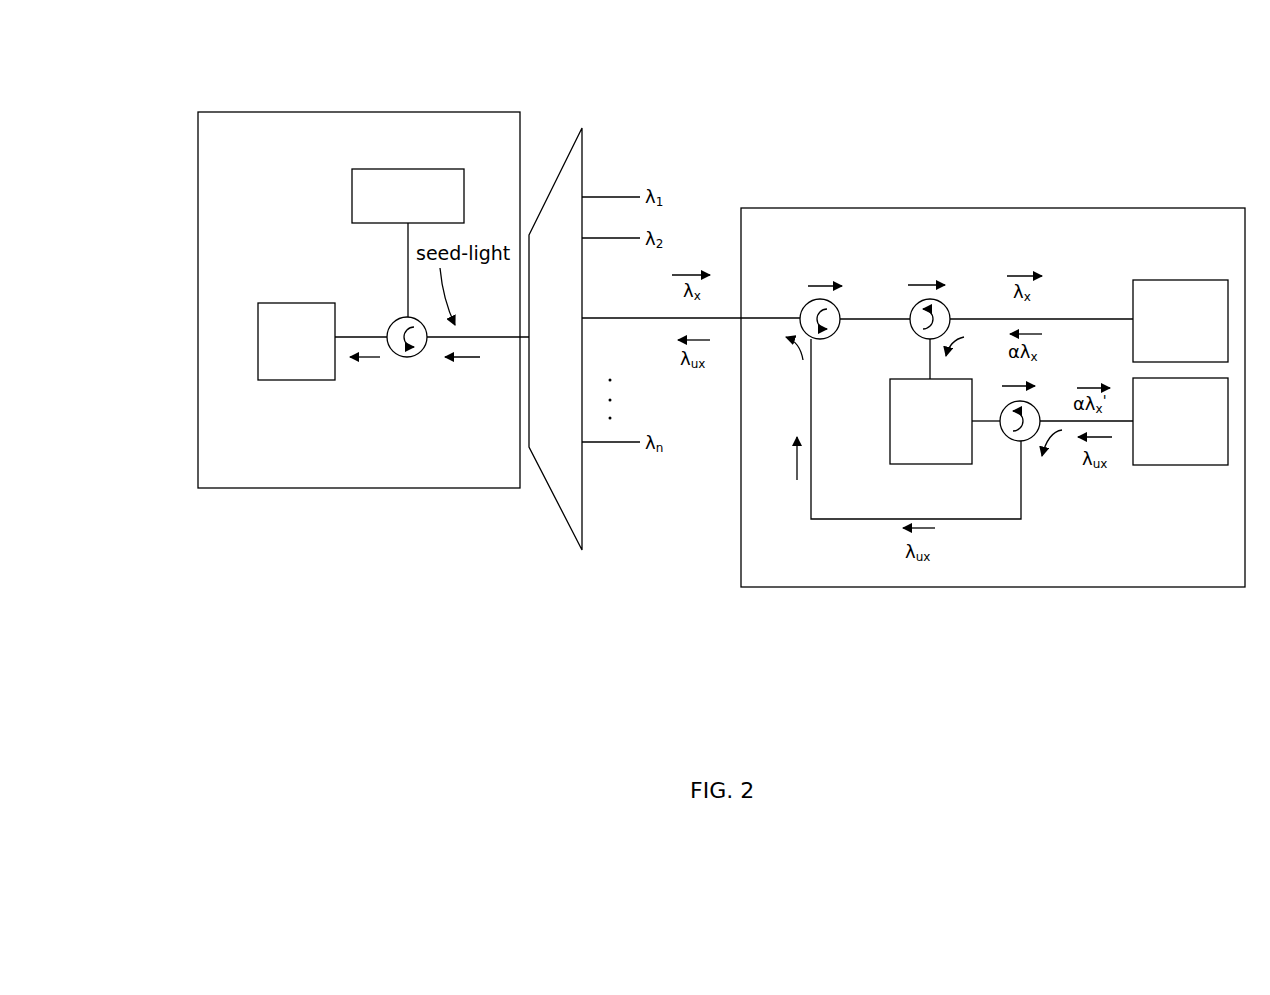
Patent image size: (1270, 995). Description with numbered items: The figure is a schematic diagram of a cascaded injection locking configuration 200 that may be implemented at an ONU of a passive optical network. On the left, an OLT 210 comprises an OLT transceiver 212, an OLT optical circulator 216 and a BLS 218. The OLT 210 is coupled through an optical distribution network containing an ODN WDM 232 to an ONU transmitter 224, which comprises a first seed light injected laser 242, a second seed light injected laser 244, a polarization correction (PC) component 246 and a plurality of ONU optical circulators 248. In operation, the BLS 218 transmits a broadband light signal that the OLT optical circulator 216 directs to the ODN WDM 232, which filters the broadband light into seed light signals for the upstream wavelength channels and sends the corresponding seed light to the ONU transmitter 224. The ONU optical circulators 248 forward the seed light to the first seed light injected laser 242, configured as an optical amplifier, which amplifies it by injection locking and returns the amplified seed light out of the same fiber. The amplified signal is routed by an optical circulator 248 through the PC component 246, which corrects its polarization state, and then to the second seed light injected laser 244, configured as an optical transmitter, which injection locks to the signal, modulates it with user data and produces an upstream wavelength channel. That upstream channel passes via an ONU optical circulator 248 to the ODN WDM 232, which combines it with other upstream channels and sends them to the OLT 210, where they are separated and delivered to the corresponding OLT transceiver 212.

The cascaded injection locking configuration 200 is at (350, 586).
The OLT 210 is at (348, 112).
The OLT transceiver 212 is at (297, 380).
The OLT optical circulator 216 is at (412, 357).
The BLS 218 is at (352, 196).
The ONU transmitter 224 is at (993, 587).
The ODN WDM 232 is at (556, 503).
The first seed light injected laser 242 is at (1180, 280).
The second seed light injected laser 244 is at (1180, 465).
The polarization correction (PC) component 246 is at (888, 445).
The ONU optical circulators 248 is at (800, 310).